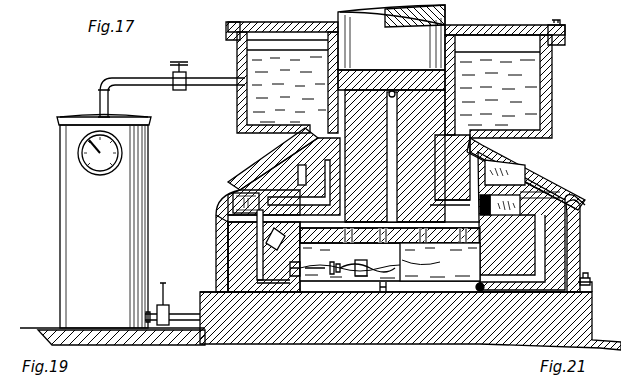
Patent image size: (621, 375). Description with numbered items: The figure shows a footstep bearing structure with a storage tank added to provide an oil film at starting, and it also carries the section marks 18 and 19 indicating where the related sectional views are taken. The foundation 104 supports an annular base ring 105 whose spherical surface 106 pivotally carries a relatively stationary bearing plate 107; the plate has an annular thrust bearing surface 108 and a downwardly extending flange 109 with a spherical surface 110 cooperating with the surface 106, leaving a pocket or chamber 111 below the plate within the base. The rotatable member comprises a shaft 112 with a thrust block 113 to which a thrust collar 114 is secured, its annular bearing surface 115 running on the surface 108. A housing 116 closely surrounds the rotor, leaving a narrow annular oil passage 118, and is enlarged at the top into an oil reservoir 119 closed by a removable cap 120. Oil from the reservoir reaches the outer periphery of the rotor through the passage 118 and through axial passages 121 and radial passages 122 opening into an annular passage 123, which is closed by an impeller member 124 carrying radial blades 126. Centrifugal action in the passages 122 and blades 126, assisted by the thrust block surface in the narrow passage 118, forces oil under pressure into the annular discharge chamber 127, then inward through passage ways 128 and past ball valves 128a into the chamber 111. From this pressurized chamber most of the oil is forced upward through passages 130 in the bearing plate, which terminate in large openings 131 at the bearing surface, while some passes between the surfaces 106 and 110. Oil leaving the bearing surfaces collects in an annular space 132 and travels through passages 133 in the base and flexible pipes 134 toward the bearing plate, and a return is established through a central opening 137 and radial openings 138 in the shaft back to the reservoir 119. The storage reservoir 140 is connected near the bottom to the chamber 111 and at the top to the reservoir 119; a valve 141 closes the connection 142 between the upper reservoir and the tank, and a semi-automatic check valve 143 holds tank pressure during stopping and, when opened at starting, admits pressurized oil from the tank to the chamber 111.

The foundation 104 is at (481, 340).
The annular base ring 105 is at (574, 264).
The spherical surface 106 is at (568, 249).
The bearing plate 107 is at (566, 196).
The annular thrust bearing surface 108 is at (532, 168).
The downwardly extending flange 109 is at (480, 282).
The spherical surface 110 is at (530, 228).
The chamber 111 is at (421, 282).
The shaft 112 is at (458, 25).
The thrust block 113 is at (528, 140).
The thrust collar 114 is at (540, 146).
The annular bearing surface 115 is at (486, 135).
The housing 116 is at (200, 195).
The annular oil passage 118 is at (262, 155).
The oil reservoir 119 is at (540, 70).
The removable cap 120 is at (546, 27).
The axial passages 121 is at (324, 132).
The radial passages 122 is at (252, 174).
The annular passage 123 is at (480, 260).
The impeller member 124 is at (556, 178).
The radial blades 126 is at (245, 195).
The annular discharge chamber 127 is at (216, 227).
The passage ways 128 is at (273, 295).
The ball valves 128a is at (310, 292).
The passages 130 is at (390, 262).
The openings 131 is at (390, 266).
The annular space 132 is at (230, 256).
The passages 133 is at (263, 275).
The flexible pipes 134 is at (381, 293).
The central opening 137 is at (452, 112).
The radial openings 138 is at (466, 54).
The storage reservoir 140 is at (63, 283).
The valve 141 is at (188, 79).
The connection 142 is at (142, 77).
The check valve 143 is at (165, 300).
The section line 18 is at (432, 203).
The section line 19 is at (415, 226).